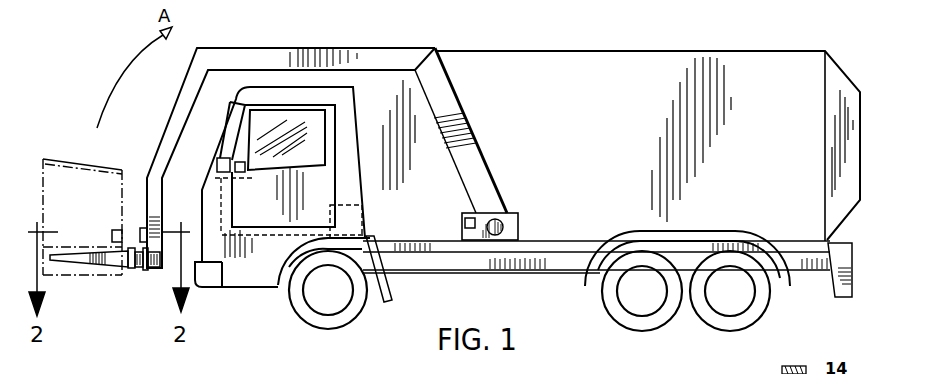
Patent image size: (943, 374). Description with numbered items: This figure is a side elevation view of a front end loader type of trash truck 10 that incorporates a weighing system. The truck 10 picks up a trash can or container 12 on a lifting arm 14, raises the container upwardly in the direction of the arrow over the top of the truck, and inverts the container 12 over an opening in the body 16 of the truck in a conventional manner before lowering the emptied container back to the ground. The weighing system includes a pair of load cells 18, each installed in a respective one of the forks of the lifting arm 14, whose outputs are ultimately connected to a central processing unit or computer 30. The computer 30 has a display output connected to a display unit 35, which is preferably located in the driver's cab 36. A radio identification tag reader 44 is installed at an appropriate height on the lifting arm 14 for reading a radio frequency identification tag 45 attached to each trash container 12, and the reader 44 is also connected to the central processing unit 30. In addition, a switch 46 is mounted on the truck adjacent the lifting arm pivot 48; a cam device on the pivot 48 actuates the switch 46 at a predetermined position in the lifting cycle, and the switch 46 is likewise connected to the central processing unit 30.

The trash truck 10 is at (563, 36).
The container 12 is at (82, 160).
The lifting arm 14 is at (192, 90).
The body 16 is at (658, 63).
The load cells 18 is at (132, 268).
The central processing unit 30 is at (363, 220).
The display unit 35 is at (220, 158).
The driver's cab 36 is at (265, 222).
The radio identification tag reader 44 is at (145, 228).
The radio frequency identification tag 45 is at (112, 232).
The switch 46 is at (465, 218).
The lifting arm pivot 48 is at (494, 204).